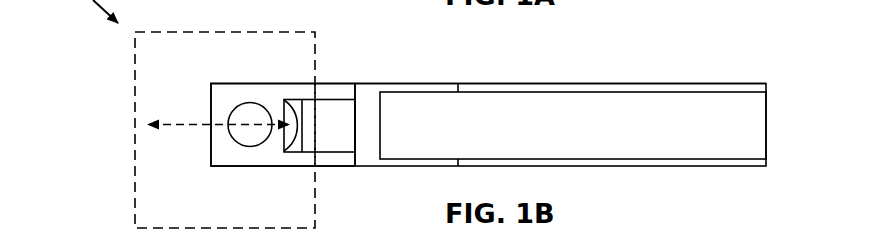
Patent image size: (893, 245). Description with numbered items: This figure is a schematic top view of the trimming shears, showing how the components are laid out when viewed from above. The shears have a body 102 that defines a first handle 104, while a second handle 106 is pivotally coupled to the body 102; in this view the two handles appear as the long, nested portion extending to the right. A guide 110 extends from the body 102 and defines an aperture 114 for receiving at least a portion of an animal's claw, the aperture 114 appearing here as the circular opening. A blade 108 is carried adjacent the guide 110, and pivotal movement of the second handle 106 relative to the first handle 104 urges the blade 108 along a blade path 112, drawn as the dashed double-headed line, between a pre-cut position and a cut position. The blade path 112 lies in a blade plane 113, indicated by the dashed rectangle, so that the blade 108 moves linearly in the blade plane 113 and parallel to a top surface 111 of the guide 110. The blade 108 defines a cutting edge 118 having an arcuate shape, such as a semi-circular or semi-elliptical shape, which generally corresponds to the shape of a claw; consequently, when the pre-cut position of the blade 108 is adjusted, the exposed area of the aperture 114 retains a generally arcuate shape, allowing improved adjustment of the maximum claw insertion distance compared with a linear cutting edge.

The body 102 is at (348, 62).
The first handle 104 is at (648, 85).
The second handle 106 is at (725, 93).
The blade 108 is at (313, 100).
The guide 110 is at (317, 167).
The top surface 111 is at (225, 99).
The blade path 112 is at (193, 122).
The blade plane 113 is at (135, 193).
The aperture 114 is at (232, 132).
The cutting edge 118 is at (285, 144).